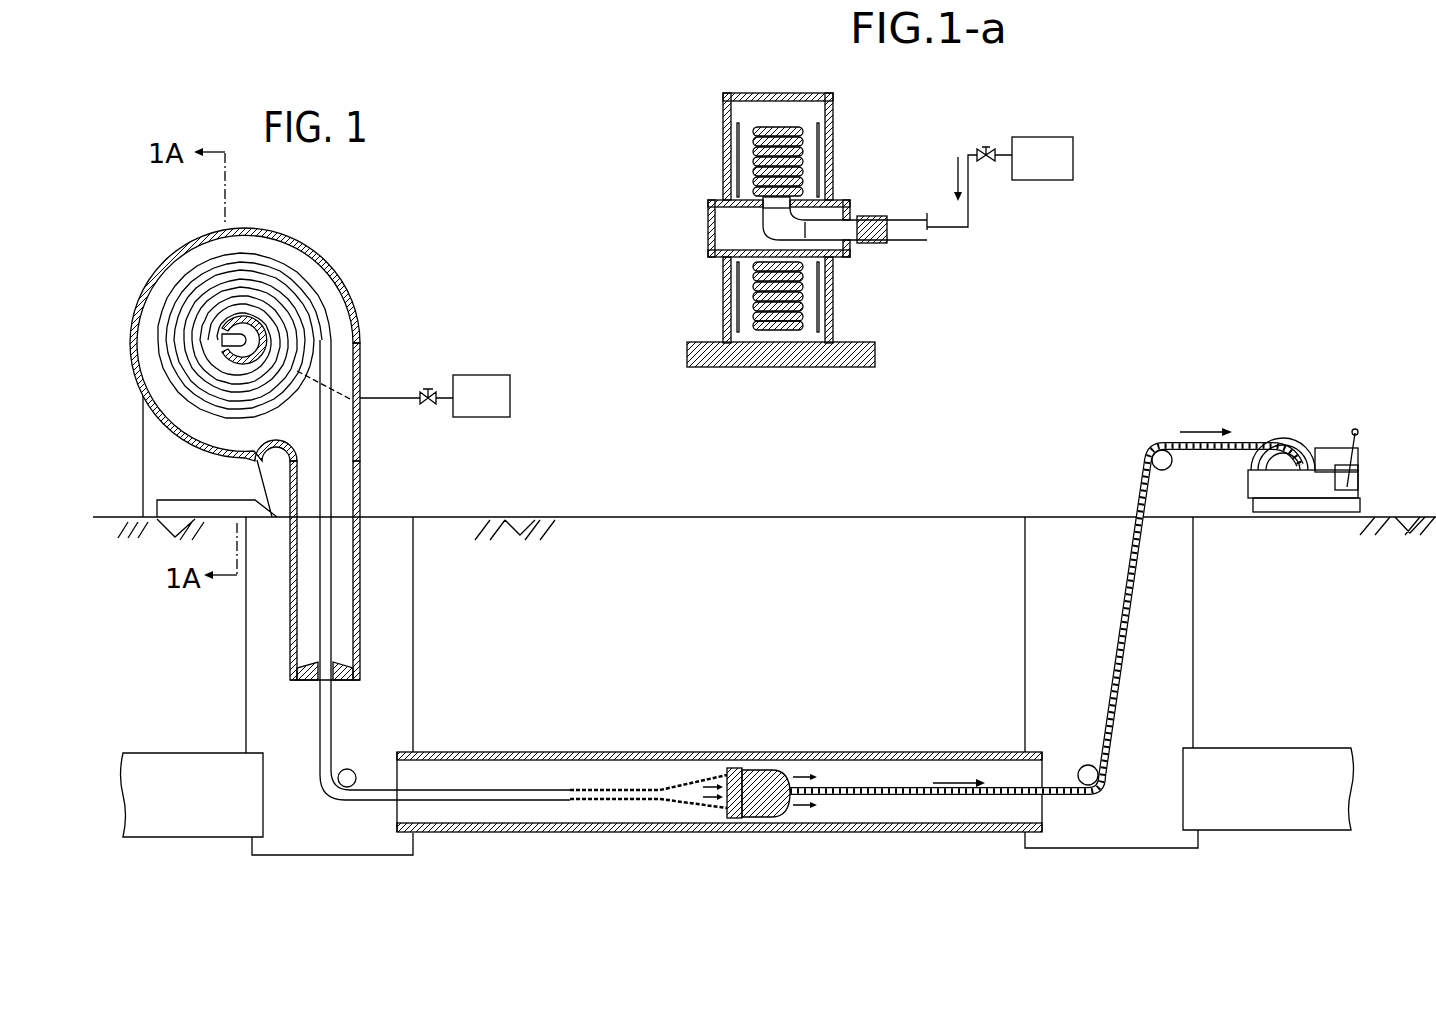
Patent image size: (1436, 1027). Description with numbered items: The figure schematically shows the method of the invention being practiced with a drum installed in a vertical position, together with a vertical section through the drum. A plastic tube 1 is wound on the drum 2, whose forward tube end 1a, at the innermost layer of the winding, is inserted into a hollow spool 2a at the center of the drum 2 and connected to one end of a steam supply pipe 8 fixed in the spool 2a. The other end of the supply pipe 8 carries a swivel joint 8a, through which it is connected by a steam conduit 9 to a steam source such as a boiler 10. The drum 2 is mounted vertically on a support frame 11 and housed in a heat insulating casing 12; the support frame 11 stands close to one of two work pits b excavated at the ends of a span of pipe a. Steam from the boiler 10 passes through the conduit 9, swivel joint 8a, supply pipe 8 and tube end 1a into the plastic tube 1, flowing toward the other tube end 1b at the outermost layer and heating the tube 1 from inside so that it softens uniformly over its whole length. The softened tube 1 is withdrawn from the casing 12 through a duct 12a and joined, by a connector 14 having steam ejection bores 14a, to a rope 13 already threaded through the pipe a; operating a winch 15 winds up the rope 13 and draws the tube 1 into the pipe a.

In FIG. 1, the plastic tube 1 is at (323, 381).
In FIG. 1A, the plastic tube 1 is at (752, 150).
In FIG. 1A, the forward tube end 1a is at (772, 208).
In FIG. 1, the other tube end 1b is at (723, 807).
In FIG. 1A, the other tube end 1b is at (757, 130).
In FIG. 1, the drum 2 is at (242, 255).
In FIG. 1A, the drum 2 is at (831, 122).
In FIG. 1, the hollow spool 2a is at (258, 302).
In FIG. 1A, the hollow spool 2a is at (839, 198).
In FIG. 1, the steam supply pipe 8 is at (225, 333).
In FIG. 1A, the steam supply pipe 8 is at (840, 277).
In FIG. 1A, the swivel joint 8a is at (874, 244).
In FIG. 1, the steam conduit 9 is at (403, 396).
In FIG. 1A, the steam conduit 9 is at (908, 240).
In FIG. 1, the boiler 10 is at (236, 342).
In FIG. 1A, the boiler 10 is at (1050, 136).
In FIG. 1, the support frame 11 is at (143, 470).
In FIG. 1A, the support frame 11 is at (809, 368).
In FIG. 1, the heat insulating casing 12 is at (346, 297).
In FIG. 1A, the heat insulating casing 12 is at (832, 141).
In FIG. 1, the duct 12a is at (362, 623).
In FIG. 1, the rope 13 is at (908, 786).
In FIG. 1, the connector 14 is at (753, 769).
In FIG. 1, the steam ejection bores 14a is at (784, 776).
In FIG. 1, the winch 15 is at (1335, 447).
In FIG. 1, the pipe a is at (508, 748).
In FIG. 1, the work pits b is at (387, 567).